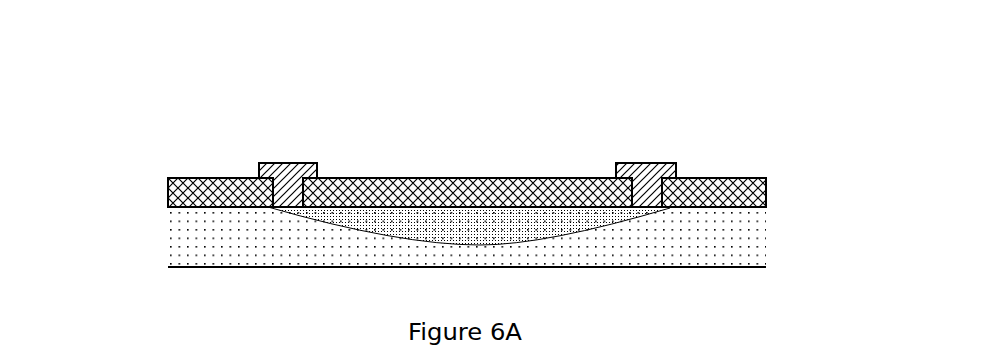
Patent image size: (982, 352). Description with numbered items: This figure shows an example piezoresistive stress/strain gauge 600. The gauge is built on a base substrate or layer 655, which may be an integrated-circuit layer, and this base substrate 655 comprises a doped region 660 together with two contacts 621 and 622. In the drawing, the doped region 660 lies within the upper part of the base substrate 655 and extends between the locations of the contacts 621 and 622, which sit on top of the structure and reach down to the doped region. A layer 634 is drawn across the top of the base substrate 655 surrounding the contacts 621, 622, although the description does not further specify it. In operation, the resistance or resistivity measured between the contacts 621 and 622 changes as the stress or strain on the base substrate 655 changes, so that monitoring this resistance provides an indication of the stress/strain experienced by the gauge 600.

The stress/strain gauge 600 is at (95, 108).
The contact 621 is at (287, 163).
The contact 622 is at (644, 162).
The semiconductor layer 634 is at (170, 193).
The base substrate or layer 655 is at (760, 242).
The doped region 660 is at (512, 242).